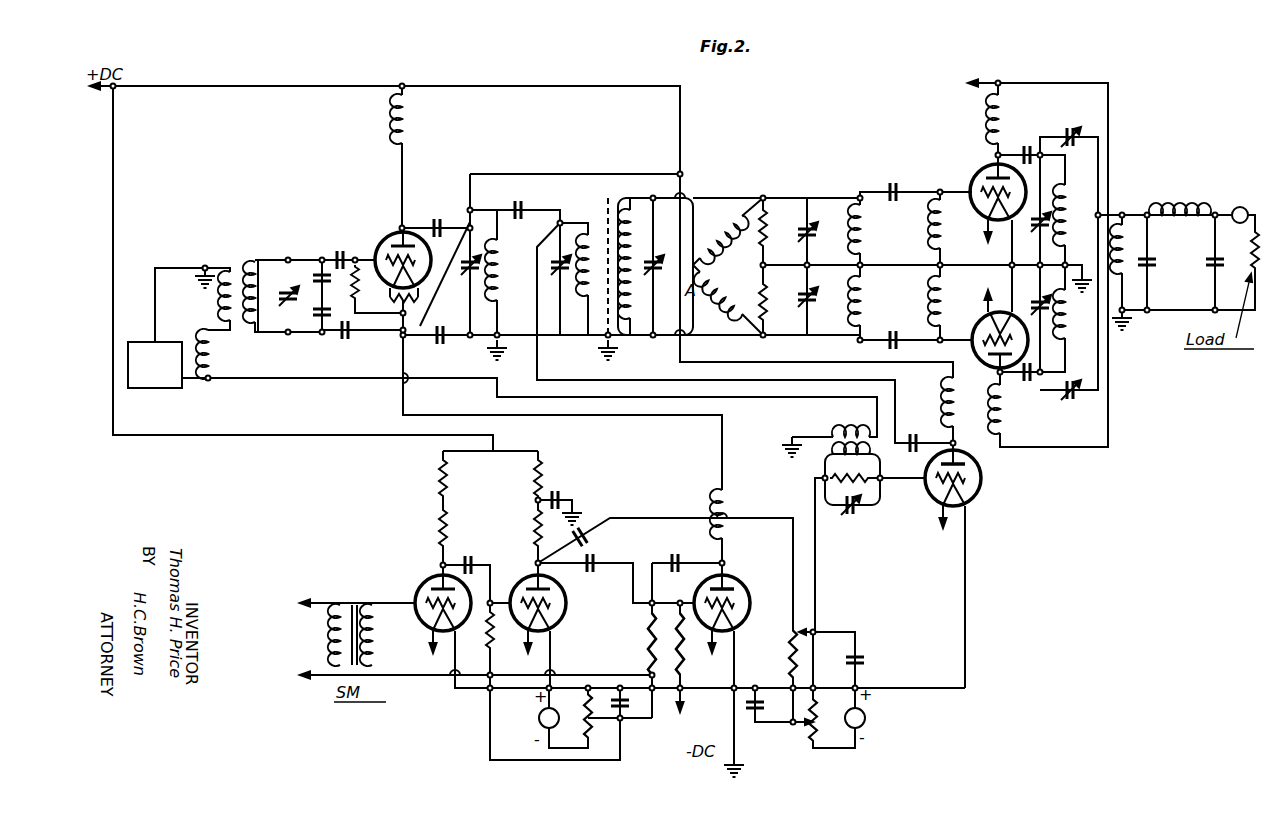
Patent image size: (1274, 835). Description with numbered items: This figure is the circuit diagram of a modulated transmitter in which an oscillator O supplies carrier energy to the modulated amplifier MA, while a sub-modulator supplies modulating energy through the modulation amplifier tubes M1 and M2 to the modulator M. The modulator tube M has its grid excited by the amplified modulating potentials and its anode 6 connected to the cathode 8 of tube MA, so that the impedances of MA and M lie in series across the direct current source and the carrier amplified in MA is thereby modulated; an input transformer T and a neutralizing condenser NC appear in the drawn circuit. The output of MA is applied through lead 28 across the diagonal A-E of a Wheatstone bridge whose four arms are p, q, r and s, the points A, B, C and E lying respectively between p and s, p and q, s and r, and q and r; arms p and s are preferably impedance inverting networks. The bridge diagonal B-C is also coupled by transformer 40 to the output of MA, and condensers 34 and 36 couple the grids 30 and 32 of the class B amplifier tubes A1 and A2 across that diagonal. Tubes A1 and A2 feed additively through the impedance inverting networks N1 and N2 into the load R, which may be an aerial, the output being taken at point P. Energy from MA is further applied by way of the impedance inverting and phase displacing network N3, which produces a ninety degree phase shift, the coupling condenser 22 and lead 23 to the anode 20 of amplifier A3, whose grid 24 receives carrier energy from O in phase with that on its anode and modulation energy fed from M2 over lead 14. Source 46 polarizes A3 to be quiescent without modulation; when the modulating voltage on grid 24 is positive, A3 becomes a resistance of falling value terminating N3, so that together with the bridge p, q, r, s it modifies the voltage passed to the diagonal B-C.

The oscillator O is at (178, 410).
The modulated amplifier MA is at (382, 248).
The cathode 8 is at (445, 274).
The neutralizing capacitor NC is at (359, 323).
The impedance inverting and phase displacing network N3 is at (484, 236).
The coupling condenser 22 is at (530, 209).
The lead 28 is at (612, 172).
The transformer 40 is at (607, 210).
The bridge arm p is at (725, 237).
The bridge arm s is at (717, 297).
The bridge point B is at (764, 197).
The bridge point C is at (757, 348).
The bridge arm q is at (790, 210).
The bridge arm r is at (786, 330).
The bridge point E is at (812, 266).
The condenser 34 is at (886, 183).
The condenser 36 is at (884, 344).
The electron discharge amplifier tube A1 is at (969, 190).
The grid 30 is at (983, 218).
The electron discharge amplifier tube A2 is at (984, 373).
The grid 32 is at (978, 320).
The impedance inverting network N1 is at (1044, 142).
The impedance inverting network N2 is at (1056, 396).
The output terminal P is at (1100, 215).
The load R is at (1252, 258).
The lead 23 is at (672, 380).
The amplifier A3 is at (985, 496).
The anode 20 is at (990, 472).
The grid 24 is at (938, 500).
The lead 14 is at (752, 518).
The input transformer T is at (350, 624).
The modulation amplifier tube M1 is at (416, 577).
The modulation amplifier tube M2 is at (517, 571).
The bridge point A is at (742, 597).
The anode 6 is at (738, 587).
The modulator M is at (742, 626).
The source 46 is at (870, 717).